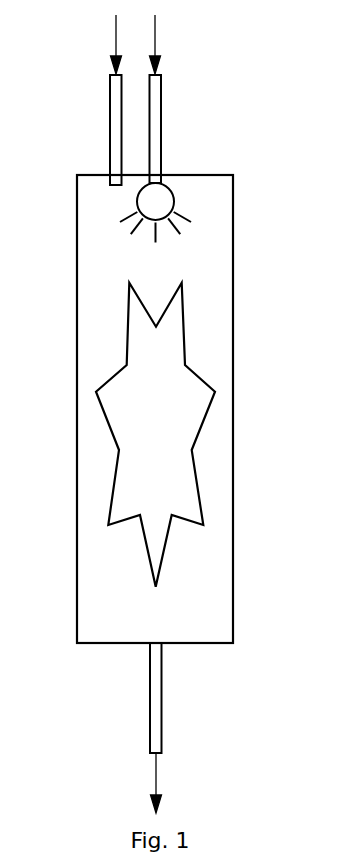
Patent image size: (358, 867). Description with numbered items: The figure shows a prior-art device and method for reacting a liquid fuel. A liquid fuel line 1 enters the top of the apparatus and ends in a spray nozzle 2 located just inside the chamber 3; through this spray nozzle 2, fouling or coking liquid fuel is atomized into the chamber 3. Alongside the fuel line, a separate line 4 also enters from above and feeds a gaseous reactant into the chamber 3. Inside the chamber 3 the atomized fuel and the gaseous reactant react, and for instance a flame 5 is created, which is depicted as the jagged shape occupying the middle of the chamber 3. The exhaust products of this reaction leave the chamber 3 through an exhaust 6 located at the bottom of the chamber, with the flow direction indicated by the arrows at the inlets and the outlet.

The liquid fuel line 1 is at (160, 133).
The spray nozzle 2 is at (175, 188).
The chamber 3 is at (200, 582).
The line 4 is at (110, 112).
The flame 5 is at (190, 402).
The exhaust 6 is at (162, 713).